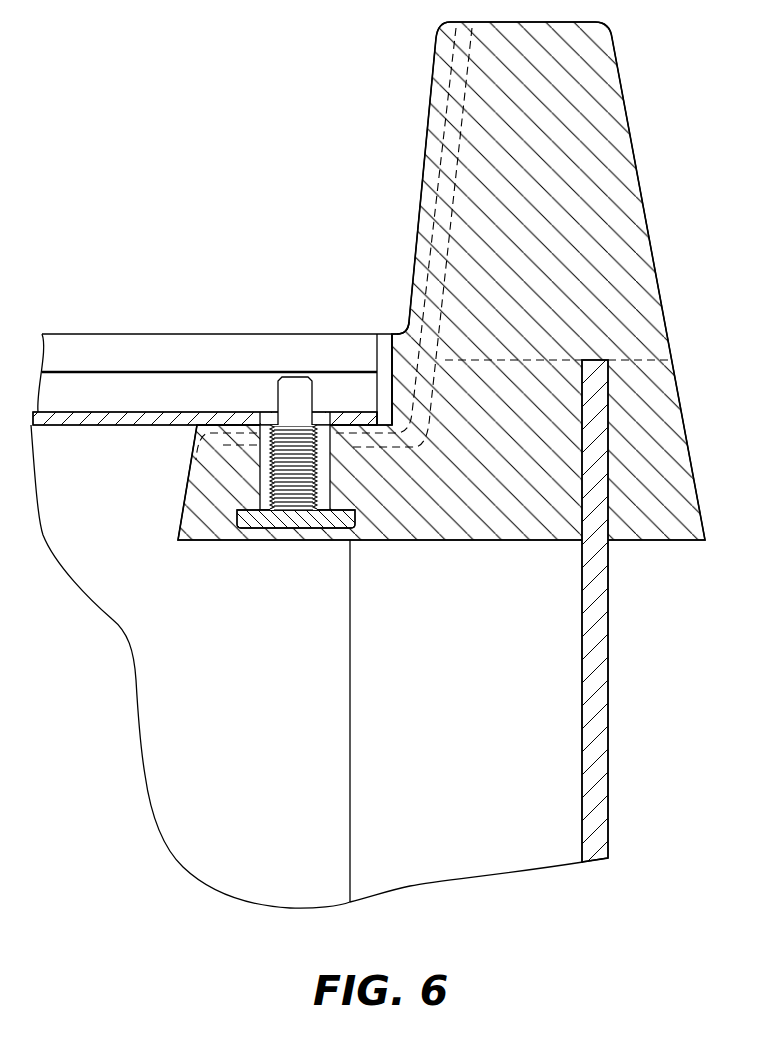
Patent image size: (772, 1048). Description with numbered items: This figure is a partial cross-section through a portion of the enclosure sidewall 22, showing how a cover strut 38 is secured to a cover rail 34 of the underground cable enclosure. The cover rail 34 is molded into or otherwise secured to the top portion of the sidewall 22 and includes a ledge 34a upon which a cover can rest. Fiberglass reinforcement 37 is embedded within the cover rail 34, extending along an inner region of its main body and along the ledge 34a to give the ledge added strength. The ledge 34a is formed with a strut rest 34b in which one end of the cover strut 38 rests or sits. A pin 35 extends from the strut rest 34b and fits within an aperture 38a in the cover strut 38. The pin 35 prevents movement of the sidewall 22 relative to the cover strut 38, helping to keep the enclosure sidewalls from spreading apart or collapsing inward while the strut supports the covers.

The sidewall 22 is at (597, 673).
The cover rail 34 is at (632, 235).
The ledge 34a is at (386, 330).
The strut rest 34b is at (196, 429).
The pin 35 is at (290, 385).
The fiberglass reinforcement 37 is at (442, 97).
The cover strut 38 is at (93, 335).
The aperture 38a is at (270, 418).